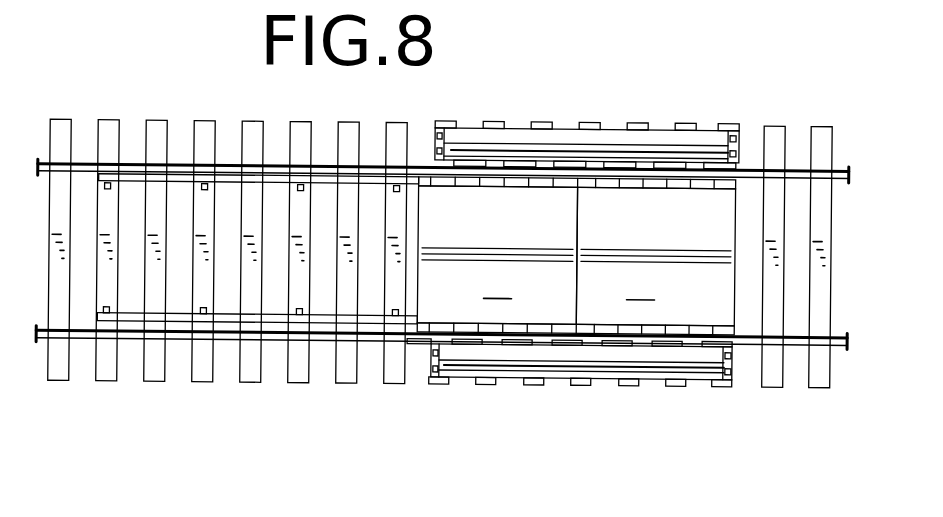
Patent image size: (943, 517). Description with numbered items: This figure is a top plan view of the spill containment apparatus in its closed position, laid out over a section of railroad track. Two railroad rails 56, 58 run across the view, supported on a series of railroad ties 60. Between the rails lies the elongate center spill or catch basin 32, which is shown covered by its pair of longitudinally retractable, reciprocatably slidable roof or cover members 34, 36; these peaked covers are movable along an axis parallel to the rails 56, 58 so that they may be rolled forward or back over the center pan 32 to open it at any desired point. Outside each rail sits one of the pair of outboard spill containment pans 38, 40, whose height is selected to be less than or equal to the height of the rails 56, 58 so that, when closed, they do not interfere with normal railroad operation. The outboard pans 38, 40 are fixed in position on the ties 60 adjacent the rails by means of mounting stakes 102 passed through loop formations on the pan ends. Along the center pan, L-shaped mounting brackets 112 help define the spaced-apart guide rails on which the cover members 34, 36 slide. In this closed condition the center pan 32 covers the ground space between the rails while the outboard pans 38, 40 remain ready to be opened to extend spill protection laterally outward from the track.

The center spill or catch basin 32 is at (438, 230).
The roof or cover member 34 is at (497, 255).
The roof or cover member 36 is at (655, 256).
The outboard spill containment pan 38 is at (597, 142).
The outboard spill containment pan 40 is at (655, 362).
The railroad rail 56 is at (272, 168).
The railroad rail 58 is at (276, 344).
The railroad tie 60 is at (350, 128).
The mounting stake 102 is at (740, 142).
The L-shaped mounting bracket 112 is at (181, 178).